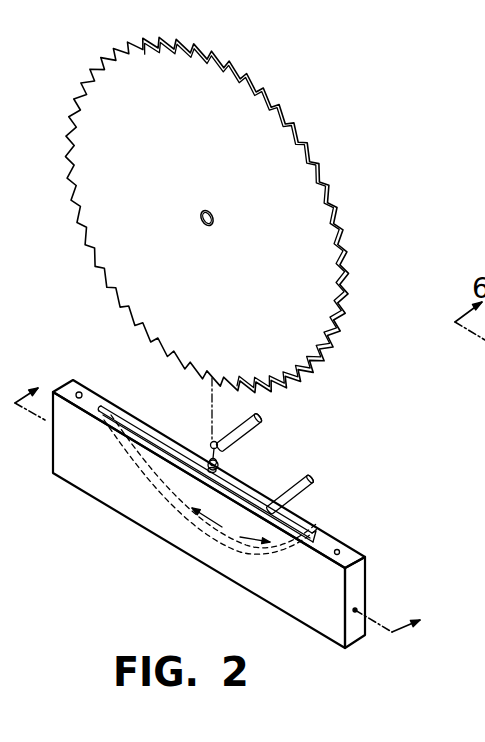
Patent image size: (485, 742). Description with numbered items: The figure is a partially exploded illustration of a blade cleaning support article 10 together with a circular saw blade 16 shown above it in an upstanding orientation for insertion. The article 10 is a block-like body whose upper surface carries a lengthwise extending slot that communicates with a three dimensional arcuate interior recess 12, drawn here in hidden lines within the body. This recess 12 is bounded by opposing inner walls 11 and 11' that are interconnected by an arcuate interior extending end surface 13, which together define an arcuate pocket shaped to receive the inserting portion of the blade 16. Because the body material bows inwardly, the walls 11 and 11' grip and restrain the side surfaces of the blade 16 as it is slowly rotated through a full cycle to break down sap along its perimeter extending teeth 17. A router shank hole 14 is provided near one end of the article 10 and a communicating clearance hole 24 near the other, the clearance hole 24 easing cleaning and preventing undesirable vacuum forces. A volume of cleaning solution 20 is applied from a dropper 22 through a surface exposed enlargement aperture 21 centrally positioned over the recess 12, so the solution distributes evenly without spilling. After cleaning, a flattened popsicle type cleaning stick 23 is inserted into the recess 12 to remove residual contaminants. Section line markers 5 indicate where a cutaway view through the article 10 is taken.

The article 10 is at (120, 547).
The inner wall 11 is at (243, 474).
The inner wall 11' is at (264, 568).
The arcuate recess 12 is at (295, 520).
The arcuate interior extending end surface 13 is at (160, 478).
The router shank hole 14 is at (82, 394).
The circular saw blade 16 is at (285, 151).
The teeth 17 is at (213, 56).
The cleaning solution 20 is at (220, 456).
The enlargement aperture 21 is at (213, 462).
The dropper 22 is at (252, 424).
The cleaning stick 23 is at (313, 486).
The clearance hole 24 is at (340, 550).
The section line 5 is at (230, 492).